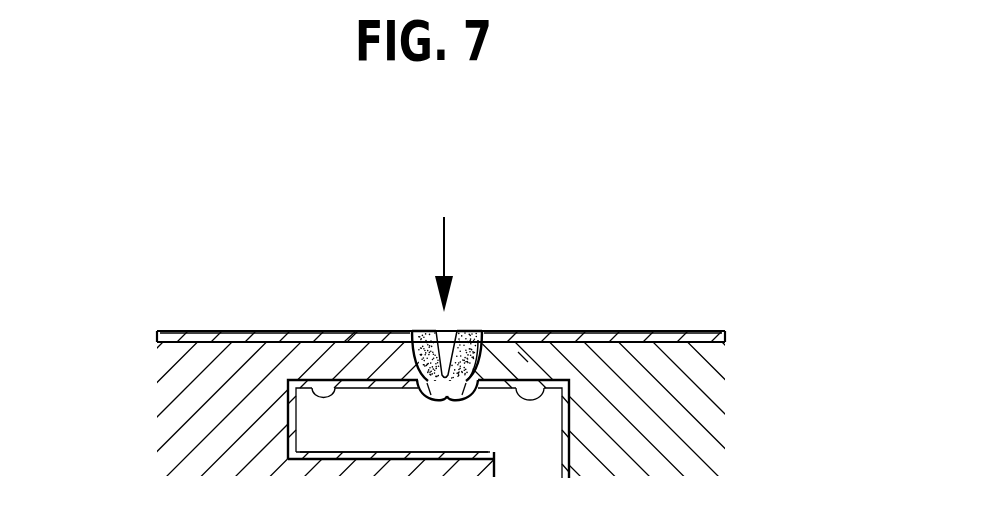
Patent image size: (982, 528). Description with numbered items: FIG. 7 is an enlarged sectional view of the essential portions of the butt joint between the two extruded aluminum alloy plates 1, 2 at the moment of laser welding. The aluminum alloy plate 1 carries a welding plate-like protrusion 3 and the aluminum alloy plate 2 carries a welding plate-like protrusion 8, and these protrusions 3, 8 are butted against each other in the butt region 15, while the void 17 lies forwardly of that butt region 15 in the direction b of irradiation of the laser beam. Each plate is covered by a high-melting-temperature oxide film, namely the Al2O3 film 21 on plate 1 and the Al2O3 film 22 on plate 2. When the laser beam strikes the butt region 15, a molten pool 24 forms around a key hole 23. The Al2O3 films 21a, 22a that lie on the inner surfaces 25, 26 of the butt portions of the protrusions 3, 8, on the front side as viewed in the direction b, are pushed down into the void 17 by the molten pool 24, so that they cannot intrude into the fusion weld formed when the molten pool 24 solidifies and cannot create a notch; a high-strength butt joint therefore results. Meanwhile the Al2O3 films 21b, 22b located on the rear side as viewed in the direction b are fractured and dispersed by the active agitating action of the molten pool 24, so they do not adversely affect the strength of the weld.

The aluminum alloy plate 1 is at (732, 358).
The aluminum alloy plate 2 is at (152, 360).
The welding plate-like protrusion 3 is at (527, 362).
The welding plate-like protrusion 8 is at (354, 350).
The butt region 15 is at (452, 328).
The void 17 is at (428, 426).
The Al2O3 film 21 is at (673, 331).
The Al2O3 film 21a is at (461, 397).
The Al2O3 film 21b is at (506, 332).
The Al2O3 film 22 is at (196, 331).
The Al2O3 film 22a is at (428, 397).
The Al2O3 film 22b is at (392, 331).
The key hole 23 is at (441, 324).
The molten pool 24 is at (471, 332).
The inner surface 25 is at (549, 380).
The inner surface 26 is at (314, 386).
The direction of irradiation of the laser beam b is at (444, 231).